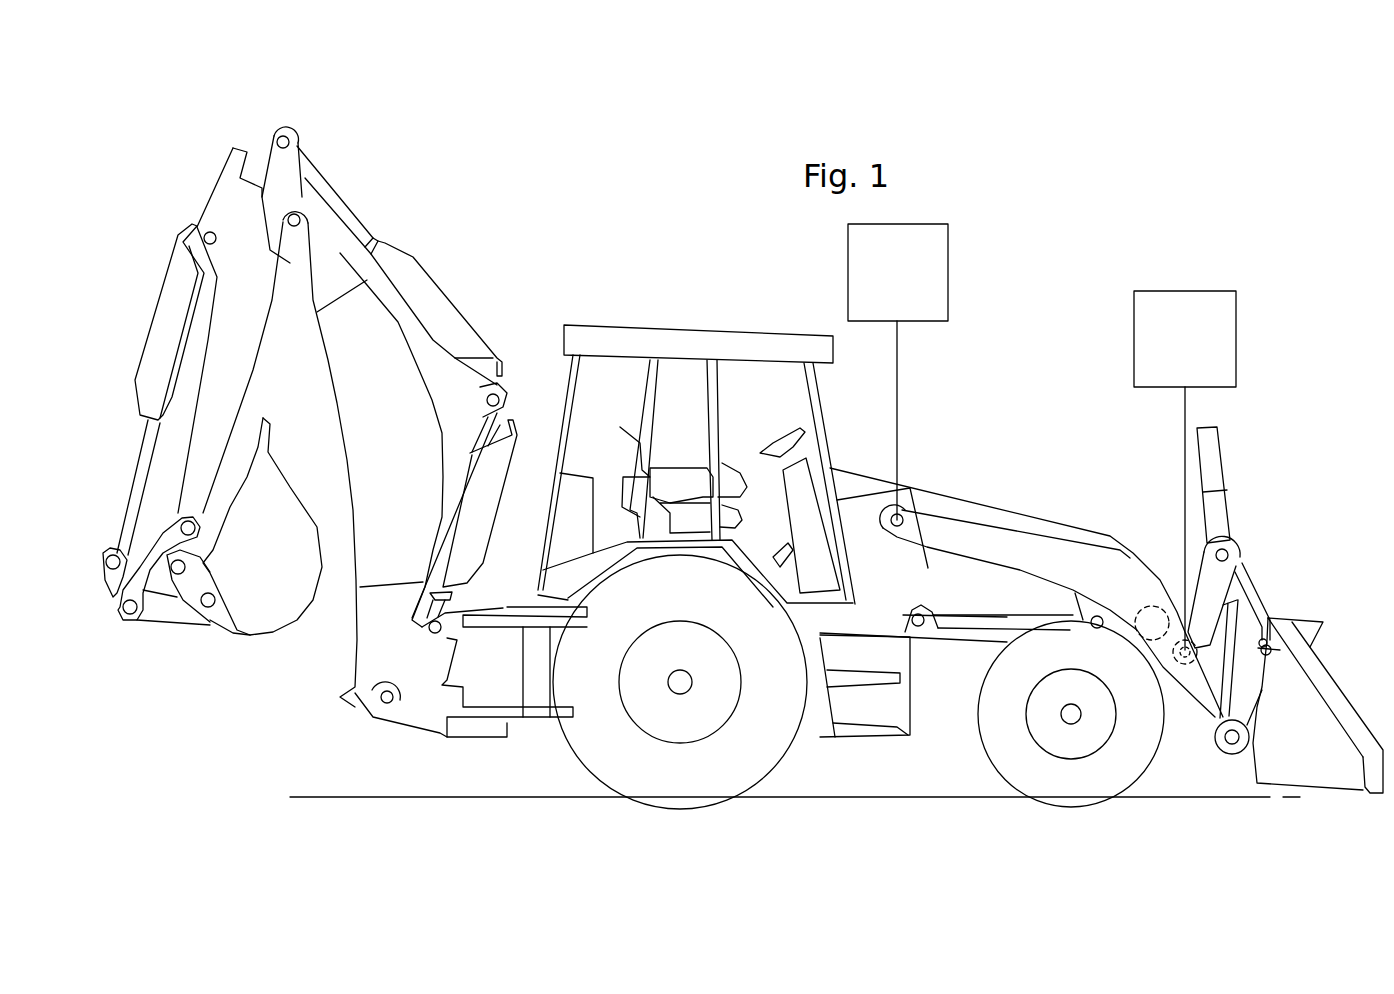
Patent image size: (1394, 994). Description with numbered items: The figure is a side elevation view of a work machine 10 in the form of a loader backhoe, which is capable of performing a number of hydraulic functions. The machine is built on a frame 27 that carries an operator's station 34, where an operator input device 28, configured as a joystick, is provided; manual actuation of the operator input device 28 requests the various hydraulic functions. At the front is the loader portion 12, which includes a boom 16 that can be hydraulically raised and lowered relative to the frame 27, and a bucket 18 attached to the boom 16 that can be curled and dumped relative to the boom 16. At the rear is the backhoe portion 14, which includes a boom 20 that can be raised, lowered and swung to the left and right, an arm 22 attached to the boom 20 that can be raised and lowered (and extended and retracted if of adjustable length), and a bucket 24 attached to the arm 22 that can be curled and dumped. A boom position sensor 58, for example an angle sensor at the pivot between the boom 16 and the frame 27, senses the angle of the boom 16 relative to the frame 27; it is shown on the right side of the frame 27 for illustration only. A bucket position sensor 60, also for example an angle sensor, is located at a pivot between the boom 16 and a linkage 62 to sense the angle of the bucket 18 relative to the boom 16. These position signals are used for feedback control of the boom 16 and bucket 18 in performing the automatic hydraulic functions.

The work machine 10 is at (1065, 302).
The loader portion 12 is at (1068, 473).
The backhoe portion 14 is at (393, 197).
The boom 16 is at (1033, 550).
The bucket 18 is at (1318, 763).
The boom 20 is at (343, 402).
The arm 22 is at (223, 198).
The bucket 24 is at (280, 603).
The frame 27 is at (927, 712).
The operator input device 28 is at (723, 467).
The operator's station 34 is at (681, 340).
The boom position sensor 58 is at (948, 258).
The bucket position sensor 60 is at (1236, 318).
The linkage 62 is at (1233, 565).